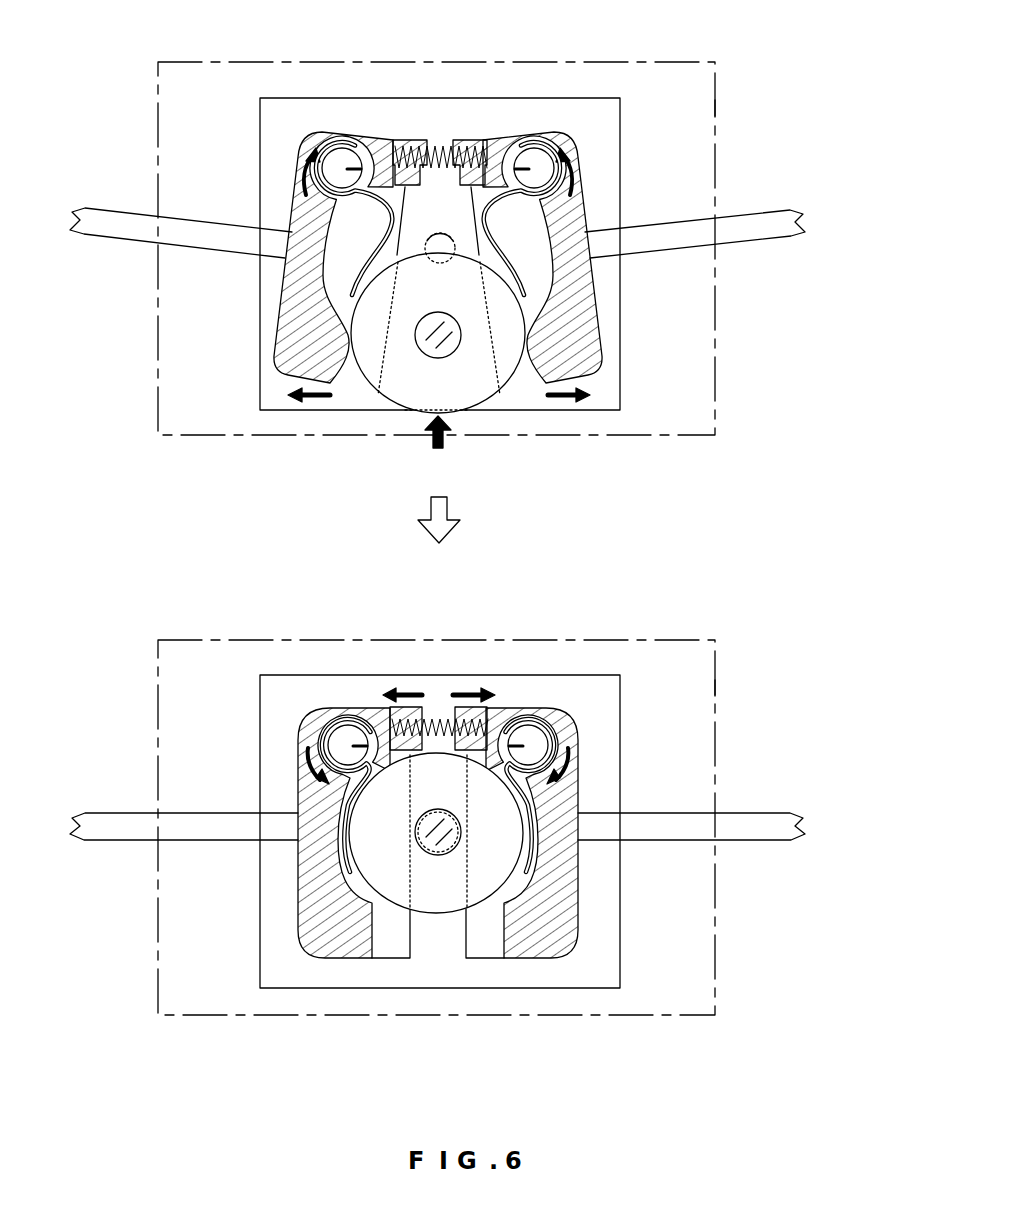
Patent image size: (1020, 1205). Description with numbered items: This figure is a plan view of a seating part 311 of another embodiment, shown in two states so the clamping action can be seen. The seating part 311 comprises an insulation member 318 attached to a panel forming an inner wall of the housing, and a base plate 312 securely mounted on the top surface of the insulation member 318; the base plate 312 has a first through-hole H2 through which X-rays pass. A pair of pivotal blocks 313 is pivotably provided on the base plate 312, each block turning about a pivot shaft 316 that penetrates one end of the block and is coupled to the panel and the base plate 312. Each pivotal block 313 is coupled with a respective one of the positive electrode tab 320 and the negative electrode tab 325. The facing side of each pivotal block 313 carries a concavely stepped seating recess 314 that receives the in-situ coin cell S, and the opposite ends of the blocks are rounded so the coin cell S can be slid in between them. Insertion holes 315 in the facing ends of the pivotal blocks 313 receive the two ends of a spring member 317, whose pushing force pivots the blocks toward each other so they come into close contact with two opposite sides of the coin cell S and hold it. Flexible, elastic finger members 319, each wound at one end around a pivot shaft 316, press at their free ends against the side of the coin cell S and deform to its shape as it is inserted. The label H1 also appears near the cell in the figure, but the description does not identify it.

The seating part 311 is at (682, 120).
The base plate 312 is at (620, 120).
The pivotal blocks 313 is at (337, 132).
The seating recess 314 is at (362, 256).
The insertion hole 315 is at (395, 150).
The pivot shafts 316 is at (342, 168).
The spring member 317 is at (437, 150).
The insulation member 318 is at (716, 108).
The finger members 319 is at (523, 267).
The positive electrode tab 320 is at (118, 222).
The negative electrode tab 325 is at (750, 232).
The in-situ coin cell S is at (462, 386).
The first hole H1 is at (428, 348).
The first through-hole H2 is at (513, 382).